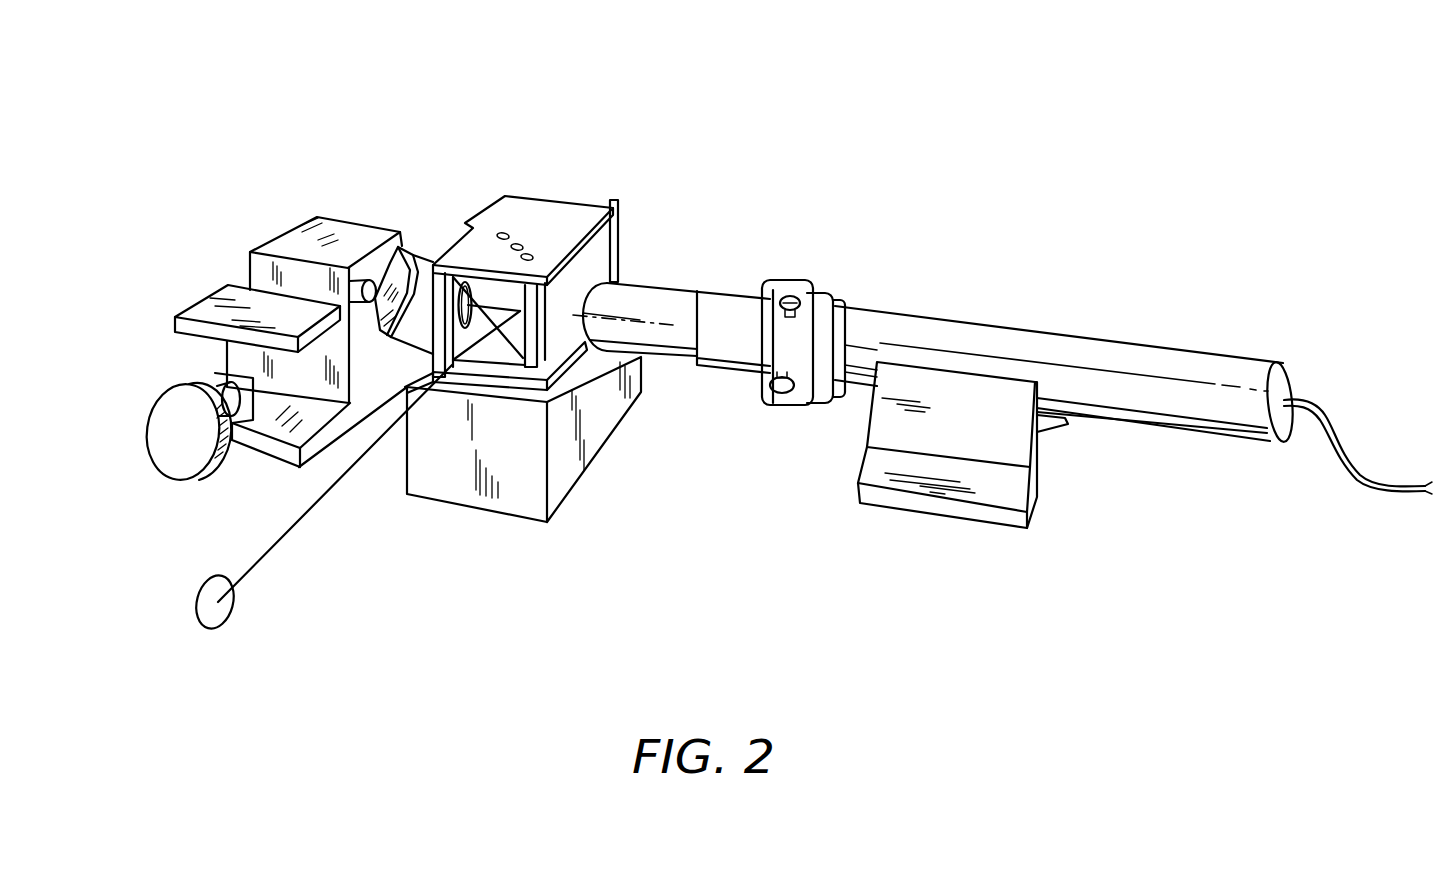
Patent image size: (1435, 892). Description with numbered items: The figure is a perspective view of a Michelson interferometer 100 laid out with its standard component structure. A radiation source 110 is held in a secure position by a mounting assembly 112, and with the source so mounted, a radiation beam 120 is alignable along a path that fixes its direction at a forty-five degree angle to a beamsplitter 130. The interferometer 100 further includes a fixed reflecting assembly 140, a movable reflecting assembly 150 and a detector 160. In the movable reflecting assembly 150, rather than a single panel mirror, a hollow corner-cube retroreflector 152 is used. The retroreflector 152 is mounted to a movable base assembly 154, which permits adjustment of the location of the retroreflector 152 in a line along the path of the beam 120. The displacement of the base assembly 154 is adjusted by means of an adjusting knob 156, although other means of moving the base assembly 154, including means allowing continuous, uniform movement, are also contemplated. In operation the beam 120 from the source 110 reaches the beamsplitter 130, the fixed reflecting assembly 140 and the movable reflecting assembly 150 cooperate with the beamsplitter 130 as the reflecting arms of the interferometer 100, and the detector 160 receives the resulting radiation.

The interferometer 100 is at (880, 83).
The radiation source 110 is at (948, 322).
The mounting assembly 112 is at (1037, 495).
The radiation beam 120 is at (560, 312).
The beamsplitter 130 is at (540, 338).
The fixed reflecting assembly 140 is at (587, 258).
The movable reflecting assembly 150 is at (410, 243).
The hollow corner-cube retroreflector 152 is at (377, 322).
The movable base assembly 154 is at (285, 232).
The adjusting knob 156 is at (197, 456).
The detector 160 is at (225, 627).